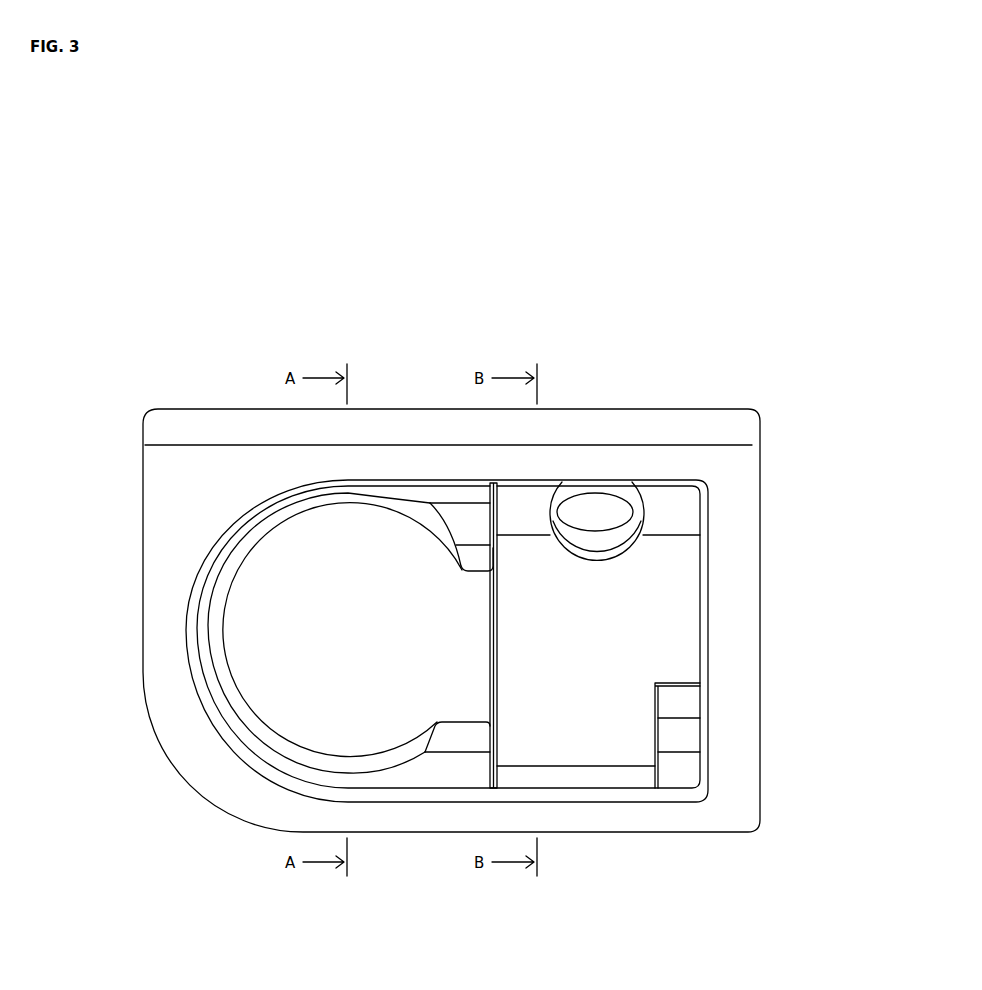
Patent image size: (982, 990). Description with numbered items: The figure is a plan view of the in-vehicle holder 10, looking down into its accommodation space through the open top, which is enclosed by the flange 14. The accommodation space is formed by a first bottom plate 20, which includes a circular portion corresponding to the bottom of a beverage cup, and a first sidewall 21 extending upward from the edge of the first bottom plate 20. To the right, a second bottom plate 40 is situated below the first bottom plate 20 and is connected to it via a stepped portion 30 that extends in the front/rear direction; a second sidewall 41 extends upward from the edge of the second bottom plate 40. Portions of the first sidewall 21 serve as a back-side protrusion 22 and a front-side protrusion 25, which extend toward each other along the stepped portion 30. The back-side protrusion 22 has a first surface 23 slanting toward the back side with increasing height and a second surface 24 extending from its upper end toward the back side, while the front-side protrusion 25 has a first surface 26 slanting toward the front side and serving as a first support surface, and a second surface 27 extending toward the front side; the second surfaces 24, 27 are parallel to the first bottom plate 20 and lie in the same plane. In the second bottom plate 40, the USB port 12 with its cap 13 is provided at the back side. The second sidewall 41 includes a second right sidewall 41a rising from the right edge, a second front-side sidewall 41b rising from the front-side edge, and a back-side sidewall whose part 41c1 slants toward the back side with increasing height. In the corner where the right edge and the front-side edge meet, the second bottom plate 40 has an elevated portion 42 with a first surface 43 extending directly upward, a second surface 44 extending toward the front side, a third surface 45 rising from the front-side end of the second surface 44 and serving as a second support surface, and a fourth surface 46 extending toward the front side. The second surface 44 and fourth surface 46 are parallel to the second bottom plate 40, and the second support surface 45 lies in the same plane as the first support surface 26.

The in-vehicle holder 10 is at (117, 365).
The USB port 12 is at (640, 512).
The cap 13 is at (696, 520).
The flange 14 is at (165, 478).
The first bottom plate 20 is at (300, 633).
The first sidewall 21 is at (215, 627).
The back-side protrusion 22 is at (446, 564).
The first surface 23 is at (472, 562).
The second surface 24 is at (463, 525).
The front-side protrusion 25 is at (444, 721).
The first surface 26 is at (420, 677).
The second surface 27 is at (460, 767).
The stepped portion 30 is at (498, 640).
The second bottom plate 40 is at (663, 582).
The second sidewall 41 is at (598, 638).
The second right sidewall 41a is at (698, 615).
The second front-side sidewall 41b is at (527, 765).
The part slanting toward the back side 41c1 is at (528, 510).
The elevated portion 42 is at (699, 708).
The first surface 43 is at (680, 683).
The second surface 44 is at (680, 703).
The third surface 45 is at (680, 735).
The fourth surface 46 is at (680, 773).